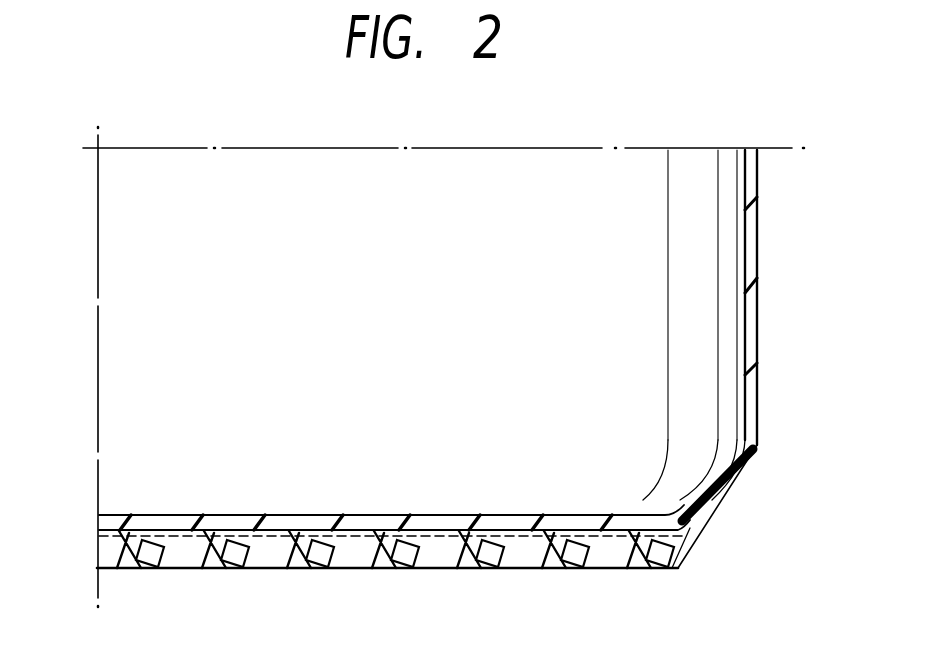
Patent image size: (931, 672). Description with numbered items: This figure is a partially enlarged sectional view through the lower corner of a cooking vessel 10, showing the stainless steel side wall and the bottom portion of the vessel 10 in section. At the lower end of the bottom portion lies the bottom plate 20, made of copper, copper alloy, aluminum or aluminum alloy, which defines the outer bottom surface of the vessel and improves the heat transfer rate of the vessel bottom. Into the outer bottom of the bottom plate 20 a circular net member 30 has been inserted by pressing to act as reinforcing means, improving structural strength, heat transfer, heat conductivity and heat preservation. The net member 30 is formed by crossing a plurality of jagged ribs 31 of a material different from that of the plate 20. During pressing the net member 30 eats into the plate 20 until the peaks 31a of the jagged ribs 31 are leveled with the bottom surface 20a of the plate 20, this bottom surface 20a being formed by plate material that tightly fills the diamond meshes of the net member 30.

The cooking vessel 10 is at (764, 300).
The bottom plate 20 is at (716, 532).
The bottom surface 20a is at (453, 548).
The net member 30 is at (257, 552).
The jagged ribs 31 is at (567, 556).
The peaks 31a is at (310, 555).